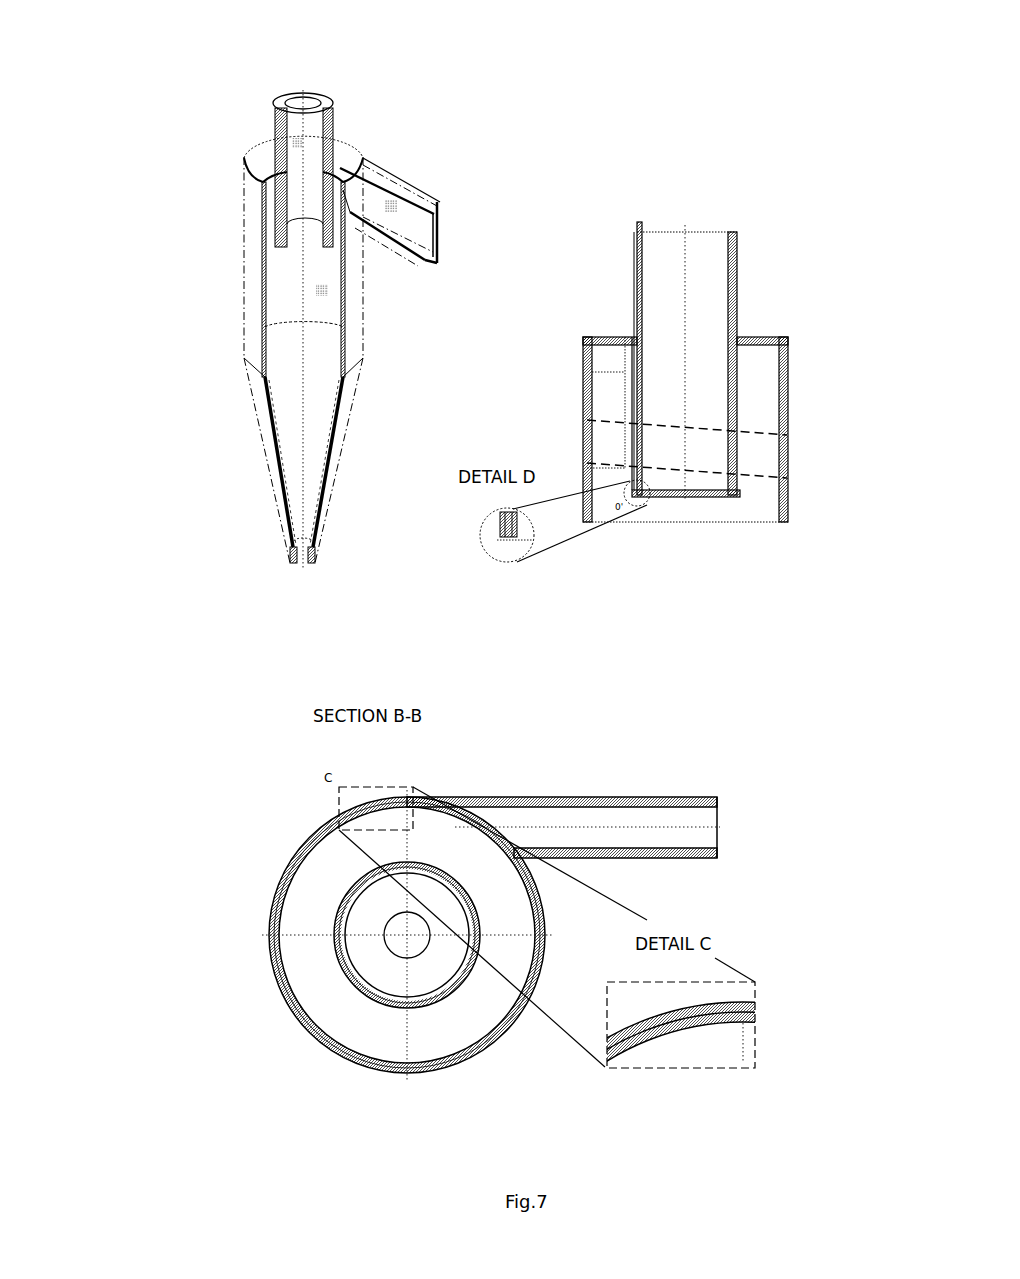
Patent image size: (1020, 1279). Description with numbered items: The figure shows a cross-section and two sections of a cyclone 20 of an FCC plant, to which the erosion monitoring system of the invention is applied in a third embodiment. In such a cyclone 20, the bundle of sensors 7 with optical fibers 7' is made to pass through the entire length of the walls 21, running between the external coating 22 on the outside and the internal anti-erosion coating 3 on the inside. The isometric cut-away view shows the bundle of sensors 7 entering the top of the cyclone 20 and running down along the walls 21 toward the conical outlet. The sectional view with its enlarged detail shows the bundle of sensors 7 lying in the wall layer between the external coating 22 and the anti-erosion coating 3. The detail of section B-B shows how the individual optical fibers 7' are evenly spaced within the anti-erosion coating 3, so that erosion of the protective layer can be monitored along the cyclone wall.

The cyclone 20 is at (204, 185).
The bundle of sensors 7 is at (506, 252).
The optical fibers 7' is at (743, 1140).
The walls 21 is at (320, 470).
The internal anti-erosion coating 3 is at (645, 245).
The external coating 22 is at (632, 303).